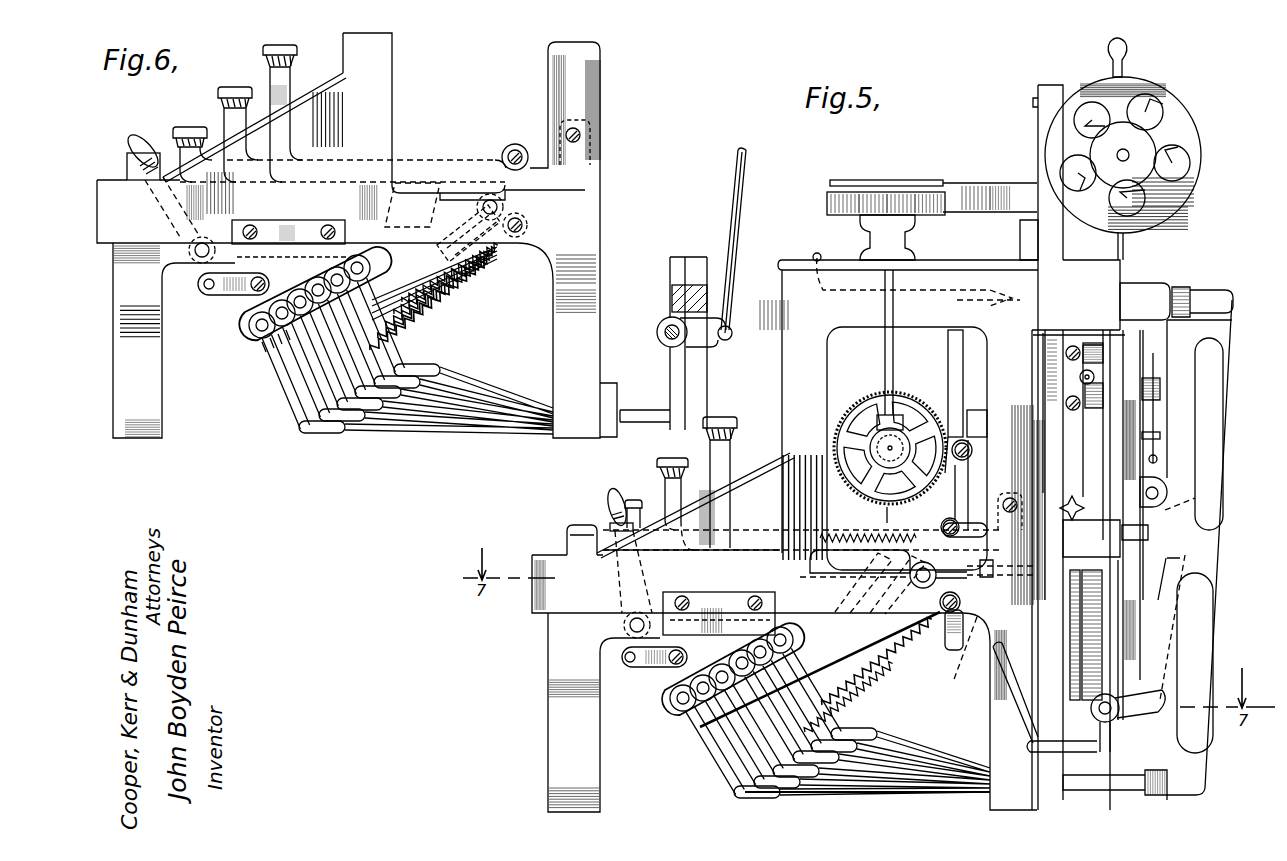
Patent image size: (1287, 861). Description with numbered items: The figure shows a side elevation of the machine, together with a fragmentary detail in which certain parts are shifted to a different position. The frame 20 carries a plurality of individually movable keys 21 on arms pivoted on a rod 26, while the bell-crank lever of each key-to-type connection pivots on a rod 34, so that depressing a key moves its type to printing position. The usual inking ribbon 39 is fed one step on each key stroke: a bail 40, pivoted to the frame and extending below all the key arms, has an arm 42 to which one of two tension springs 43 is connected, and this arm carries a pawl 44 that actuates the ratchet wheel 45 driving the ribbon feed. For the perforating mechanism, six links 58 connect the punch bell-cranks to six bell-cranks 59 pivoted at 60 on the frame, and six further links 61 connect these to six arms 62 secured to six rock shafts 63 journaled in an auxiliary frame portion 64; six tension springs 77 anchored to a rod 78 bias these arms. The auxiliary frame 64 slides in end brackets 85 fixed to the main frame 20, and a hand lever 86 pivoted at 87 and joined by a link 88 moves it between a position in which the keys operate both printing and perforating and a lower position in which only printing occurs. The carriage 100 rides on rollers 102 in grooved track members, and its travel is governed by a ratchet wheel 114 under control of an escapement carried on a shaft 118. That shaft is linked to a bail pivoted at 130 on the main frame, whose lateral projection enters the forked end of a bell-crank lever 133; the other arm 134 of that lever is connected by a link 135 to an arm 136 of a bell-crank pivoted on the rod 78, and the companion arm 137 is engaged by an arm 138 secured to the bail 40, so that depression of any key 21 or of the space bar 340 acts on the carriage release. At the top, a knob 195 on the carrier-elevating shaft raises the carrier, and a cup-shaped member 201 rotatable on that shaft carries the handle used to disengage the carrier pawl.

In FIG. 6, the frame 20 is at (108, 182).
In FIG. 5, the frame 20 is at (544, 565).
In FIG. 6, the keys 21 is at (198, 128).
In FIG. 5, the keys 21 is at (728, 418).
In FIG. 6, the rod 26 is at (576, 128).
In FIG. 5, the rod 26 is at (1006, 503).
In FIG. 6, the rod 34 is at (515, 146).
In FIG. 5, the inking ribbon 39 is at (965, 190).
In FIG. 5, the bail 40 is at (940, 602).
In FIG. 5, the arm 42 is at (968, 518).
In FIG. 5, the tension springs 43 is at (800, 523).
In FIG. 5, the pawl 44 is at (887, 515).
In FIG. 5, the ratchet wheel 45 is at (868, 398).
In FIG. 6, the links 58 is at (743, 240).
In FIG. 6, the bell-cranks 59 is at (714, 342).
In FIG. 6, the pivot 60 is at (657, 334).
In FIG. 6, the links 61 is at (490, 393).
In FIG. 5, the links 61 is at (897, 758).
In FIG. 5, the arms 62 is at (730, 745).
In FIG. 6, the rock shafts 63 is at (262, 330).
In FIG. 6, the auxiliary frame portion 64 is at (248, 302).
In FIG. 5, the auxiliary frame portion 64 is at (673, 678).
In FIG. 5, the tension springs 77 is at (868, 672).
In FIG. 5, the rod 78 is at (912, 624).
In FIG. 6, the end brackets 85 is at (281, 231).
In FIG. 5, the end brackets 85 is at (701, 596).
In FIG. 6, the hand lever 86 is at (138, 140).
In FIG. 5, the hand lever 86 is at (610, 495).
In FIG. 6, the pivot 87 is at (202, 258).
In FIG. 5, the pivot 87 is at (632, 638).
In FIG. 5, the link 88 is at (647, 665).
In FIG. 5, the carriage 100 is at (1078, 469).
In FIG. 5, the rollers 102 is at (1082, 515).
In FIG. 5, the ratchet wheel 114 is at (1158, 356).
In FIG. 5, the shaft 118 is at (1162, 482).
In FIG. 5, the pivot 130 is at (1100, 712).
In FIG. 5, the bell-crank lever 133 is at (1128, 718).
In FIG. 5, the arm 134 is at (1048, 748).
In FIG. 5, the link 135 is at (1000, 742).
In FIG. 5, the arm 136 is at (942, 637).
In FIG. 5, the arm 137 is at (960, 682).
In FIG. 5, the arm 138 is at (967, 572).
In FIG. 5, the knob 195 is at (1145, 152).
In FIG. 5, the cup-shaped member 201 is at (1182, 114).
In FIG. 5, the space bar 340 is at (578, 523).